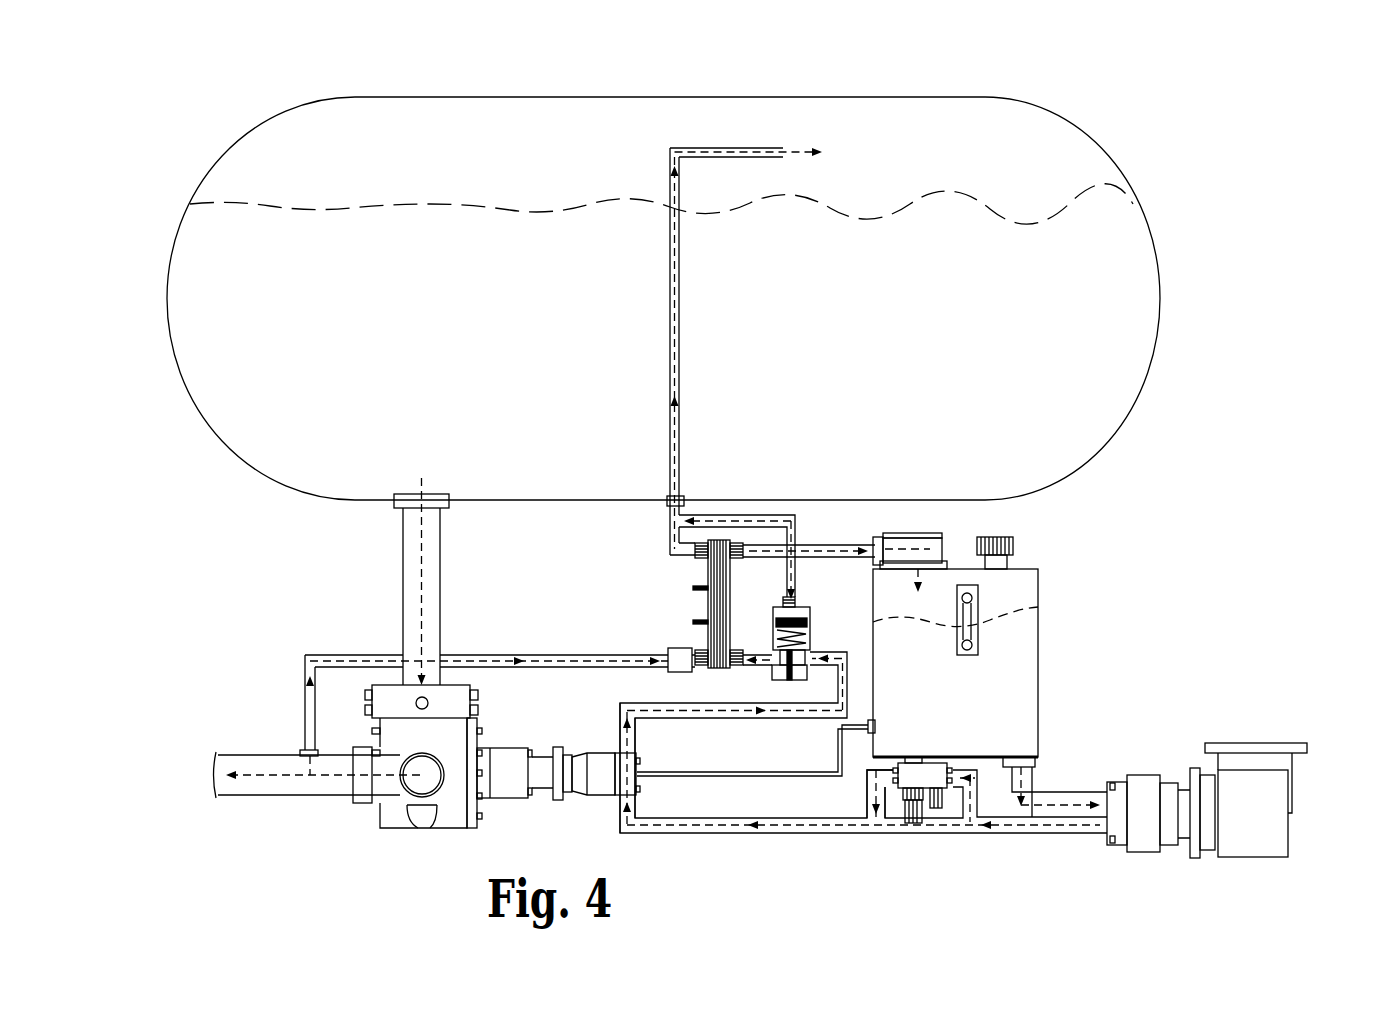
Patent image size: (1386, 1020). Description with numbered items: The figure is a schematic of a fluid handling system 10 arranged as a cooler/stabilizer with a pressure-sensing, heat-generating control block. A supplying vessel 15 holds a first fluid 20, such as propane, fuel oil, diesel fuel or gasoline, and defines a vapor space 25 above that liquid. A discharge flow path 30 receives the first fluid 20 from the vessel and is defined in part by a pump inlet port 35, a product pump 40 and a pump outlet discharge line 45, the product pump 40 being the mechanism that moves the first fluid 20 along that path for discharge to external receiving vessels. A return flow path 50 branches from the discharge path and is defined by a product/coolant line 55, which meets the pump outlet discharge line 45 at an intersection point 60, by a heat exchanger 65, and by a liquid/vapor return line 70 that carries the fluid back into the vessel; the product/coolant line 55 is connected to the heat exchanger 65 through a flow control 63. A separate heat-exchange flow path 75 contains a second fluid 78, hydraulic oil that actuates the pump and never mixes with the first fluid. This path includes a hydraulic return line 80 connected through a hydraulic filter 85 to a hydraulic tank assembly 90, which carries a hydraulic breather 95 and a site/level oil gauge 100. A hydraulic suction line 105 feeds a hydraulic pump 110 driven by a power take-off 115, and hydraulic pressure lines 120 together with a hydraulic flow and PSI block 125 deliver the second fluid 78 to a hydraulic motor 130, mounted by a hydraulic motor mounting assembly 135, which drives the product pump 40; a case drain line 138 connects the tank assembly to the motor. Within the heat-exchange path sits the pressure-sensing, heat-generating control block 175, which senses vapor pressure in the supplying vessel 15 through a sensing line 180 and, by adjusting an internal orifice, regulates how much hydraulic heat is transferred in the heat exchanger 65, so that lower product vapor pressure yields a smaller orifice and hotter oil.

The fluid handling system 10 is at (188, 123).
The supplying vessel 15 is at (260, 128).
The first fluid 20 is at (452, 228).
The vapor space 25 is at (1045, 142).
The discharge flow path 30 is at (425, 597).
The pump inlet port 35 is at (412, 573).
The product pump 40 is at (392, 813).
The pump outlet discharge line 45 is at (247, 762).
The return flow path 50 is at (680, 262).
The product/coolant line 55 is at (305, 660).
The intersection point 60 is at (313, 750).
The flow control 63 is at (680, 667).
The heat exchanger 65 is at (712, 597).
The liquid/vapor return line 70 is at (670, 305).
The heat-exchange flow path 75 is at (823, 543).
The second fluid 78 is at (1040, 607).
The hydraulic return line 80 is at (803, 545).
The hydraulic filter 85 is at (935, 533).
The hydraulic tank assembly 90 is at (1023, 693).
The hydraulic breather 95 is at (1007, 537).
The site/level oil gauge 100 is at (968, 617).
The hydraulic suction line 105 is at (1050, 810).
The hydraulic pump 110 is at (1140, 790).
The power take-off 115 is at (1263, 802).
The hydraulic pressure lines 120 is at (1003, 832).
The hydraulic flow and PSI block 125 is at (920, 810).
The hydraulic motor 130 is at (603, 780).
The hydraulic motor mounting assembly 135 is at (503, 788).
The case drain line 138 is at (668, 770).
The pressure-sensing, heat-generating control block 175 is at (797, 613).
The sensing line 180 is at (702, 517).